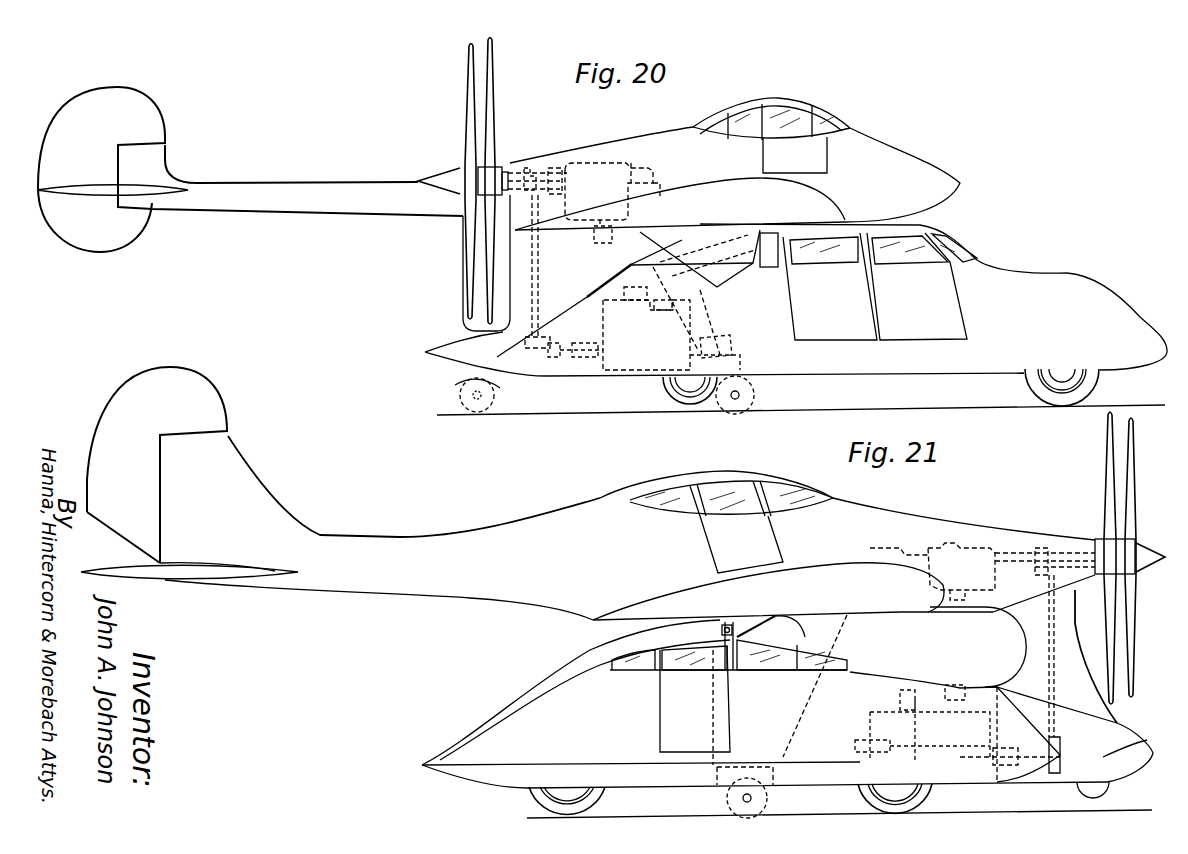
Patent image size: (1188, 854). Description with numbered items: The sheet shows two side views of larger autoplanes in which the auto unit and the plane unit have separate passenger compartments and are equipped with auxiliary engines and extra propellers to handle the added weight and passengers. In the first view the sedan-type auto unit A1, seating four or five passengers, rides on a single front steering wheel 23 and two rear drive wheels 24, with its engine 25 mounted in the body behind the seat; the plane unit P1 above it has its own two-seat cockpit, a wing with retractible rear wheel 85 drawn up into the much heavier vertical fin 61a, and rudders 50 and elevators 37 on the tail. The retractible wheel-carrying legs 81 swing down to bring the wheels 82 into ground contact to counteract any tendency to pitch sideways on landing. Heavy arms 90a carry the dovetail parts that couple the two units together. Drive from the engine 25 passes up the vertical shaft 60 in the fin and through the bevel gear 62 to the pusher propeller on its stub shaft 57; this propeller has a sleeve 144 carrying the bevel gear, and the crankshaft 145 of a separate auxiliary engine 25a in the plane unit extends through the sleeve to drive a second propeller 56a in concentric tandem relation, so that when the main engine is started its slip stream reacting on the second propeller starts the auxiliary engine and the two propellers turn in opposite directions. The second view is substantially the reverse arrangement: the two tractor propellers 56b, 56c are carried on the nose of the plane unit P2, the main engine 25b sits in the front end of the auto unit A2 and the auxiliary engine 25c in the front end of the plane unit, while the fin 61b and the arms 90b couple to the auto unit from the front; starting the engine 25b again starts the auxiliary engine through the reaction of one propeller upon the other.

In FIG. 20, the rudders 50 is at (148, 113).
In FIG. 21, the rudders 50 is at (218, 407).
In FIG. 20, the elevators 37 is at (78, 193).
In FIG. 21, the elevators 37 is at (129, 573).
In FIG. 20, the second propeller 56a is at (464, 121).
In FIG. 21, the tractor propeller 56b is at (1105, 487).
In FIG. 21, the tractor propeller 56c is at (1134, 486).
In FIG. 20, the stub shaft 57 is at (494, 112).
In FIG. 20, the sleeve 144 is at (520, 166).
In FIG. 21, the sleeve 144 is at (1056, 546).
In FIG. 20, the bevel gears 62 is at (563, 165).
In FIG. 20, the crankshaft 145 is at (609, 203).
In FIG. 21, the crankshaft 145 is at (1005, 543).
In FIG. 20, the auxiliary engine 25a is at (662, 166).
In FIG. 21, the main engine 25b is at (853, 726).
In FIG. 21, the auxiliary engine 25c is at (899, 539).
In FIG. 20, the engine 25 is at (707, 328).
In FIG. 20, the plane unit P1 is at (875, 147).
In FIG. 21, the plane unit P2 is at (908, 522).
In FIG. 20, the auto unit A1 is at (1008, 276).
In FIG. 21, the auto unit A2 is at (574, 706).
In FIG. 20, the vertical shaft 60 is at (537, 273).
In FIG. 21, the vertical shaft 60 is at (1054, 684).
In FIG. 20, the arms 90a is at (666, 235).
In FIG. 21, the arms 90b is at (787, 612).
In FIG. 20, the vertical fin 61a is at (510, 290).
In FIG. 21, the fin 61b is at (1026, 641).
In FIG. 20, the retractible wheel-carrying legs 81 is at (775, 362).
In FIG. 21, the retractible wheel-carrying legs 81 is at (806, 709).
In FIG. 20, the rear wheel 85 is at (460, 388).
In FIG. 20, the rear drive wheels 24 is at (667, 387).
In FIG. 21, the rear drive wheels 24 is at (596, 798).
In FIG. 20, the wheels 82 is at (757, 395).
In FIG. 21, the wheels 82 is at (770, 801).
In FIG. 20, the front steering wheel 23 is at (1090, 386).
In FIG. 21, the front steering wheel 23 is at (923, 800).